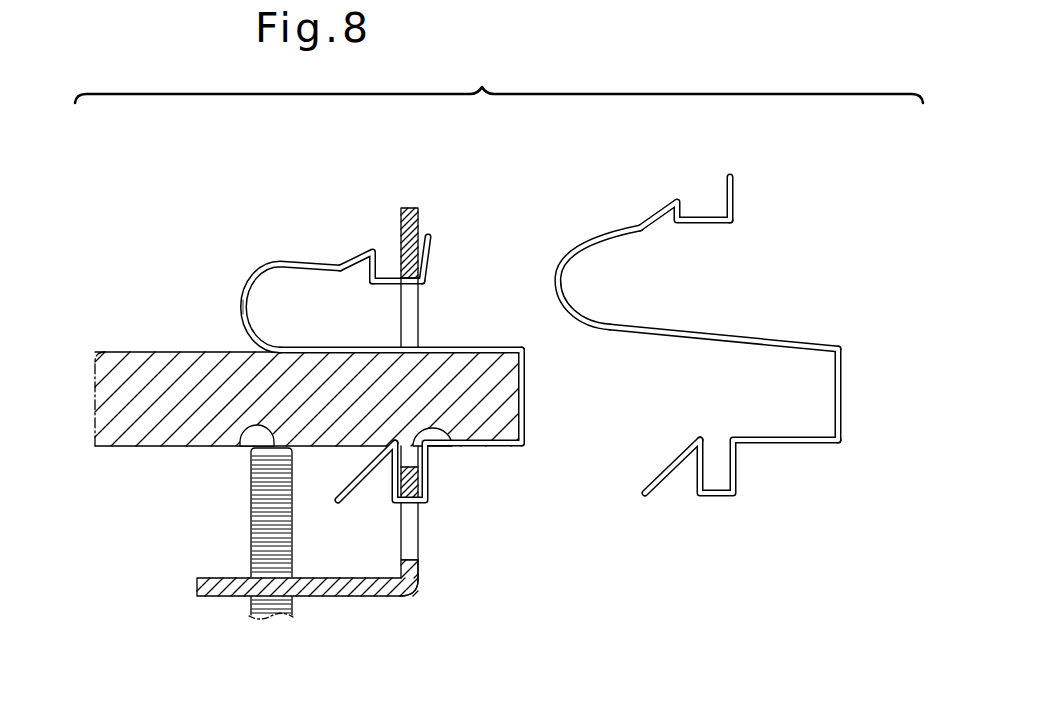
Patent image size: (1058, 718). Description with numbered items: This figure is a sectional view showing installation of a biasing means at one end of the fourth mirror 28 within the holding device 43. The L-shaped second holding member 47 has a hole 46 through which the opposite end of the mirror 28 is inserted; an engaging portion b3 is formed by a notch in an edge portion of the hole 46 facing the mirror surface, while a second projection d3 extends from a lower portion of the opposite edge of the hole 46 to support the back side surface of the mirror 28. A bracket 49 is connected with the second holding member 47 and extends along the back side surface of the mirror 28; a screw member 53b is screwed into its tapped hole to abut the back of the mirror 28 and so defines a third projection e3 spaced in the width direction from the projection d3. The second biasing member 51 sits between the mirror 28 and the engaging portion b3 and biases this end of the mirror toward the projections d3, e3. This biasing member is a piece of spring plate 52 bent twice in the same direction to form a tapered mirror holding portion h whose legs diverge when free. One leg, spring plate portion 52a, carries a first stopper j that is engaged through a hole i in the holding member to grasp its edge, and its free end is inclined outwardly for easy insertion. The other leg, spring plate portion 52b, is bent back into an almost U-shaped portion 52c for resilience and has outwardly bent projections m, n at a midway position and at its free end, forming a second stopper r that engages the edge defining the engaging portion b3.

The fourth mirror 28 is at (160, 452).
The mirror holding portion h is at (508, 402).
The third projection e3 is at (243, 430).
The second projection d3 is at (445, 455).
The spring plate 52 is at (524, 347).
The spring plate portion 52a is at (490, 447).
The spring plate portion 52b is at (462, 347).
The U-shaped portion 52c is at (243, 302).
The projection m is at (374, 258).
The projection n is at (428, 253).
The second stopper r is at (385, 284).
The first stopper j is at (388, 493).
The second biasing member 51 is at (237, 270).
The second holding member 47 is at (422, 222).
The hole 46 is at (420, 317).
The engaging portion b3 is at (406, 290).
The hole i is at (413, 542).
The screw member 53b is at (252, 540).
The bracket 49 is at (218, 598).
The holding device 43 is at (432, 600).